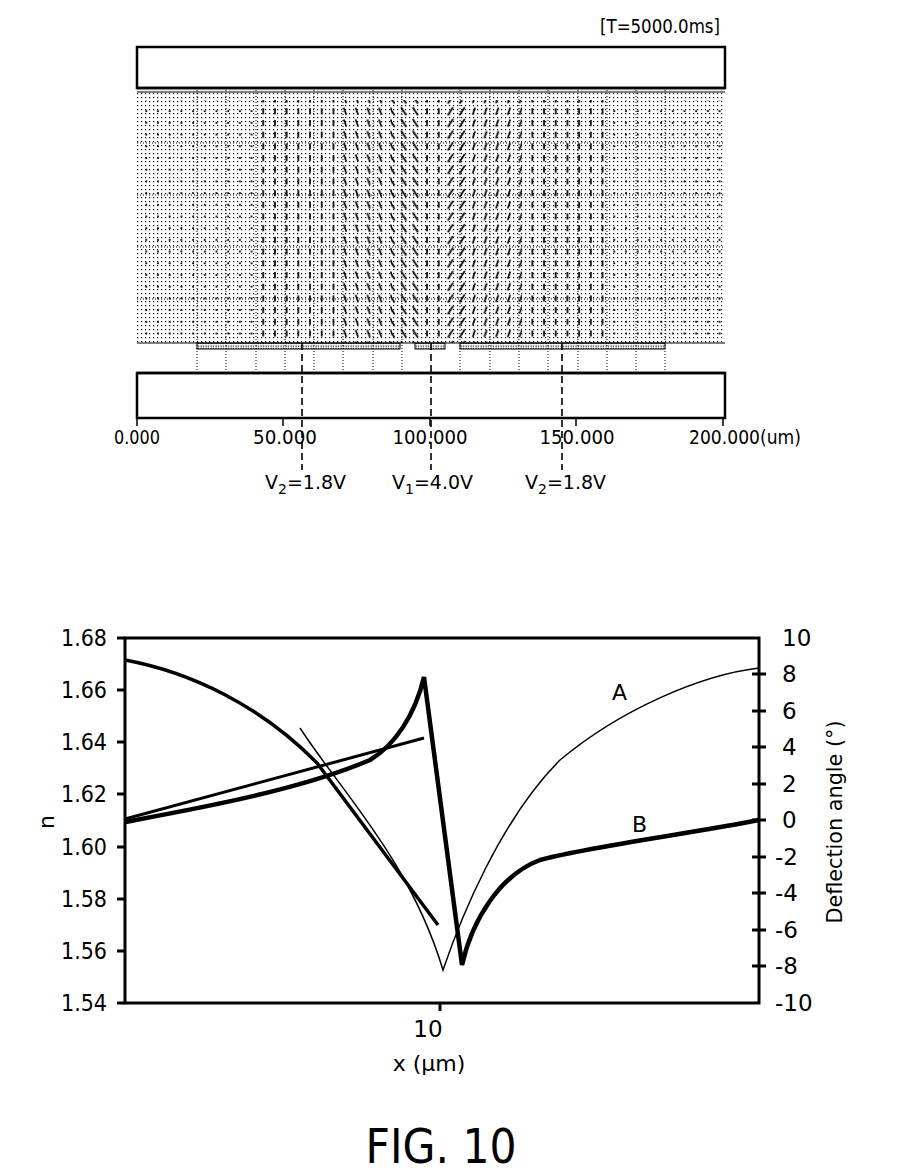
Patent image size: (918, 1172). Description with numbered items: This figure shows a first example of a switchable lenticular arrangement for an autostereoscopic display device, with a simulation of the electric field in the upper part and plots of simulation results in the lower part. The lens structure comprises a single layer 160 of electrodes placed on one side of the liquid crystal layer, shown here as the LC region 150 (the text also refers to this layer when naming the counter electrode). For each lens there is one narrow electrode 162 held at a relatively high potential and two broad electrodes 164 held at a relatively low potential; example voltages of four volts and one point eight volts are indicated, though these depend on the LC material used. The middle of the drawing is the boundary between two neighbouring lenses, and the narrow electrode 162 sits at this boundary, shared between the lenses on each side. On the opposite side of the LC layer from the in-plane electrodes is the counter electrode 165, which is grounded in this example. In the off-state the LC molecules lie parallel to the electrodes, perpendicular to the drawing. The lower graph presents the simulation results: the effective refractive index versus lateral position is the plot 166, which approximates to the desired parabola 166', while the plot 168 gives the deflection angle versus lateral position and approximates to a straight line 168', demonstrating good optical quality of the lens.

The liquid crystal layer 150 is at (727, 218).
The single layer of electrodes 160 is at (675, 348).
The narrow electrode 162 is at (418, 352).
The broad electrodes 164 is at (253, 352).
The counter electrode 165 is at (727, 92).
The plot of effective refractive index 166 is at (529, 819).
The parabola 166' is at (281, 792).
The plot of deflection angle 168 is at (442, 821).
The straight line 168' is at (274, 774).